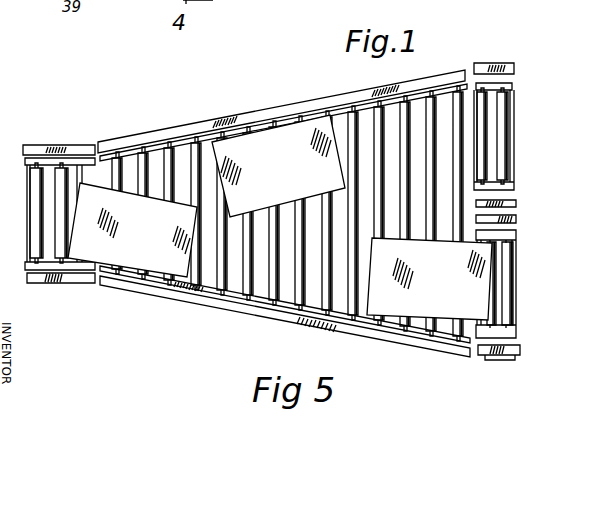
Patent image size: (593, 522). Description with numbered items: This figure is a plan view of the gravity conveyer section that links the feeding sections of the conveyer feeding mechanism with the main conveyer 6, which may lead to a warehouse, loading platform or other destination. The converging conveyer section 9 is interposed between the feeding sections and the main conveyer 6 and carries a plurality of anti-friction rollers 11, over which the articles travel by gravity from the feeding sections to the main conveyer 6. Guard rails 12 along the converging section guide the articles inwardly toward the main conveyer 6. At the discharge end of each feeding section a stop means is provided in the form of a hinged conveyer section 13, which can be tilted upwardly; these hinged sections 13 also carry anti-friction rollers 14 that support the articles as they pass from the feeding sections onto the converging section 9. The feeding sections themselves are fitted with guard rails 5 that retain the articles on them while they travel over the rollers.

The guard rails 5 is at (495, 65).
The main conveyer 6 is at (27, 225).
The converging conveyer section 9 is at (185, 298).
The anti-friction rollers 11 is at (372, 123).
The guard rails 12 is at (263, 108).
The hinged conveyer section 13 is at (520, 68).
The anti-friction rollers 14 is at (512, 143).